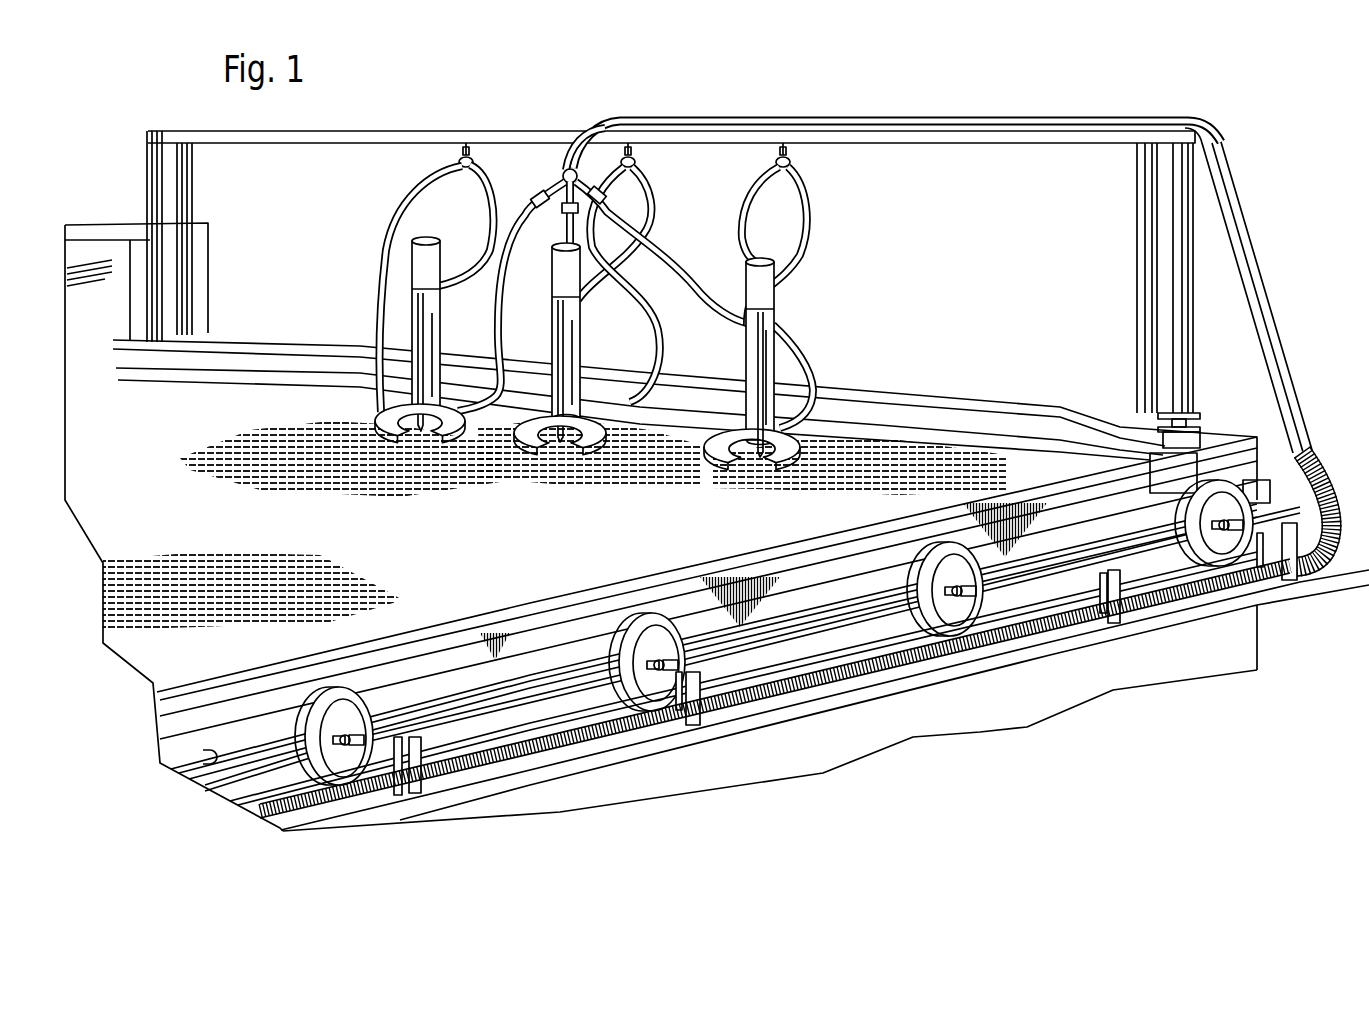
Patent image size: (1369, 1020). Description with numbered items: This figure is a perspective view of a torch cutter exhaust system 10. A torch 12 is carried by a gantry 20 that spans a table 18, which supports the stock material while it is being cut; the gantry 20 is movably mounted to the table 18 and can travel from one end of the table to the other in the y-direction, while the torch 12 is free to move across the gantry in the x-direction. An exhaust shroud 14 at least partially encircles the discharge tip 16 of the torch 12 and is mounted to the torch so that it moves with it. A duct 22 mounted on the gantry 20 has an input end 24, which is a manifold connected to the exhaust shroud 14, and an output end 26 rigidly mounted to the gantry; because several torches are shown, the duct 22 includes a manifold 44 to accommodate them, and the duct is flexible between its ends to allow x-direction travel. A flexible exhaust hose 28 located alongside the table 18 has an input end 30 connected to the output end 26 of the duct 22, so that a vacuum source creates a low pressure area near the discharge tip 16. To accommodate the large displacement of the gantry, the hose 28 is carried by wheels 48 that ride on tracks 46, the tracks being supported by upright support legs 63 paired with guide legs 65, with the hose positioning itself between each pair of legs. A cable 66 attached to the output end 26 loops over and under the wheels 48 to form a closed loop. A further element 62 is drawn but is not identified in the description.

The torch cutter exhaust system 10 is at (1216, 103).
The torch 12 is at (757, 347).
The exhaust shroud 14 is at (707, 432).
The discharge tip 16 is at (717, 421).
The table 18 is at (173, 667).
The gantry 20 is at (390, 131).
The duct 22 is at (870, 122).
The input end 24 is at (460, 410).
The output end 26 is at (1276, 333).
The flexible exhaust hose 28 is at (1027, 645).
The input end 30 is at (1312, 457).
The manifold 44 is at (570, 150).
The tracks 46 is at (227, 800).
The wheels 48 is at (337, 770).
The guide rail 62 is at (203, 757).
The support legs 63 is at (915, 612).
The guide legs 65 is at (1137, 607).
The cable 66 is at (853, 570).